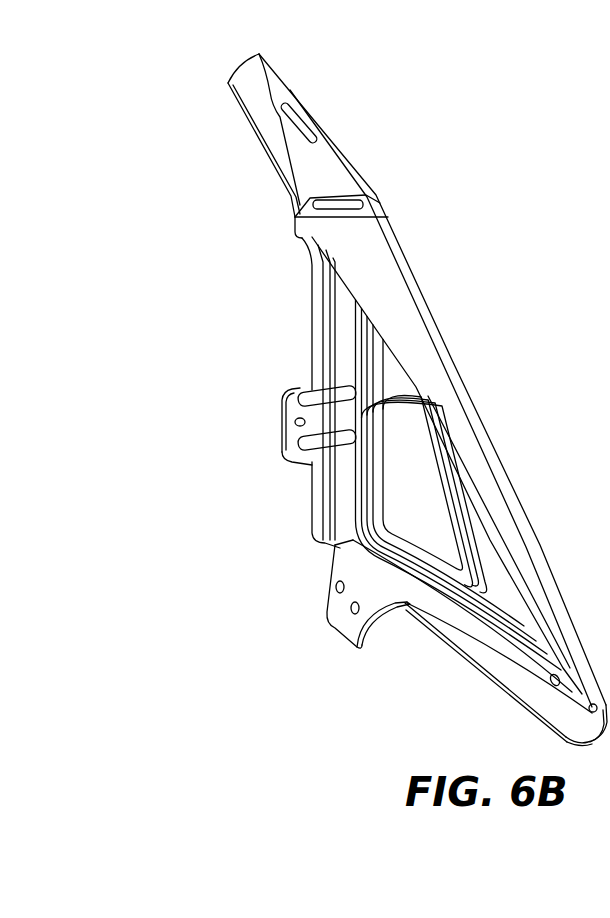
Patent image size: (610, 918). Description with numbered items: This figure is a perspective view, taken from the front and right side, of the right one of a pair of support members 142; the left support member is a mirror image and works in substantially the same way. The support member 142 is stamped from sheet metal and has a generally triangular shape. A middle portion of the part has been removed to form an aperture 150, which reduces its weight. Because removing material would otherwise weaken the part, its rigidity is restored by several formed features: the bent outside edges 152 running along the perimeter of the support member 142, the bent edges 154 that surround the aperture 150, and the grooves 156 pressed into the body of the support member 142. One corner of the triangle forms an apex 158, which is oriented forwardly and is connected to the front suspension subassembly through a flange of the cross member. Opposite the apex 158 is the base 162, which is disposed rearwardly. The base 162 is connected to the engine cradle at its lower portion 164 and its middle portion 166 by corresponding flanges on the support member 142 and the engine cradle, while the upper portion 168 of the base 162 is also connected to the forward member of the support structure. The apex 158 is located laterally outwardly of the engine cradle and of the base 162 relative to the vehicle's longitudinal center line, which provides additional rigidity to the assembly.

The support member 142 is at (495, 209).
The upper portion 168 is at (316, 112).
The bent outside edges 152 is at (352, 242).
The grooves 156 is at (360, 383).
The aperture 150 is at (407, 484).
The bent edges 154 is at (462, 508).
The middle portion 166 is at (290, 409).
The base 162 is at (330, 460).
The lower portion 164 is at (332, 604).
The apex 158 is at (570, 693).